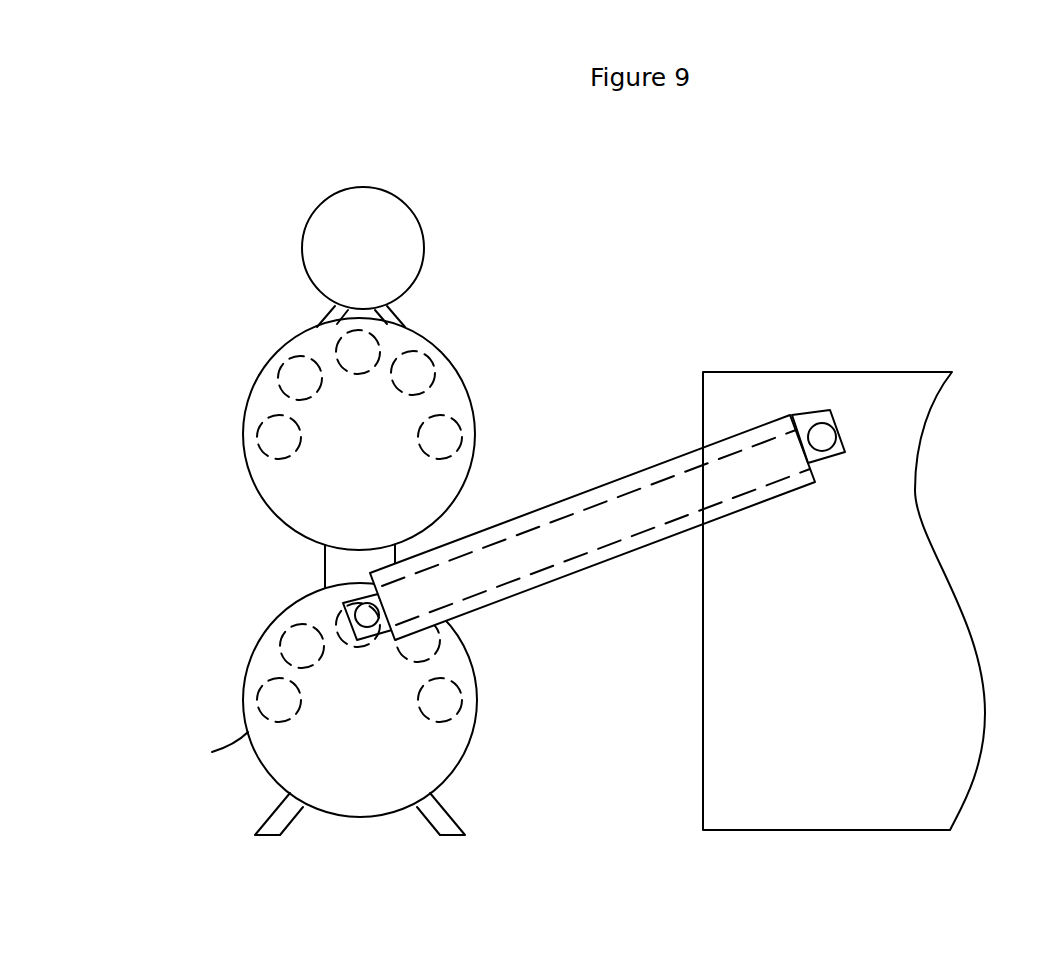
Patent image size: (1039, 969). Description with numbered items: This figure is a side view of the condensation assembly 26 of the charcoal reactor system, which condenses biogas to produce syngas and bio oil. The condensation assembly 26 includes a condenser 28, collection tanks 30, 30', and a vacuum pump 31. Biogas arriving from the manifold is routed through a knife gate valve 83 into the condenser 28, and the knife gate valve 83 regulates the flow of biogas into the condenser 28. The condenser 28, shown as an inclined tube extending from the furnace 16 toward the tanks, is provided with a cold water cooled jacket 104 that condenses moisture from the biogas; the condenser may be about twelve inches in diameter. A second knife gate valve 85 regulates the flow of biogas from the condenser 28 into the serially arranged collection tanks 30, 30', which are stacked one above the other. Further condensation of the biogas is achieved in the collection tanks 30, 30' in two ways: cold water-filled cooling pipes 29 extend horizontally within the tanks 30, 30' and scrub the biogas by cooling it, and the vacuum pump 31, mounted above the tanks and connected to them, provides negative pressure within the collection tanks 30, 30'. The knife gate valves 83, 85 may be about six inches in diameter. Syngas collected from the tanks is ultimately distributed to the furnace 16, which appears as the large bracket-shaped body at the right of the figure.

The furnace 16 is at (775, 372).
The condensation assembly 26 is at (568, 315).
The condenser 28 is at (580, 493).
The cooling pipes 29 is at (258, 450).
The collection tank 30 is at (344, 690).
The collection tank 30' is at (359, 428).
The vacuum pump 31 is at (422, 227).
The knife gate valve 83 is at (837, 433).
The knife gate valve 85 is at (348, 622).
The cold water cooled jacket 104 is at (635, 488).